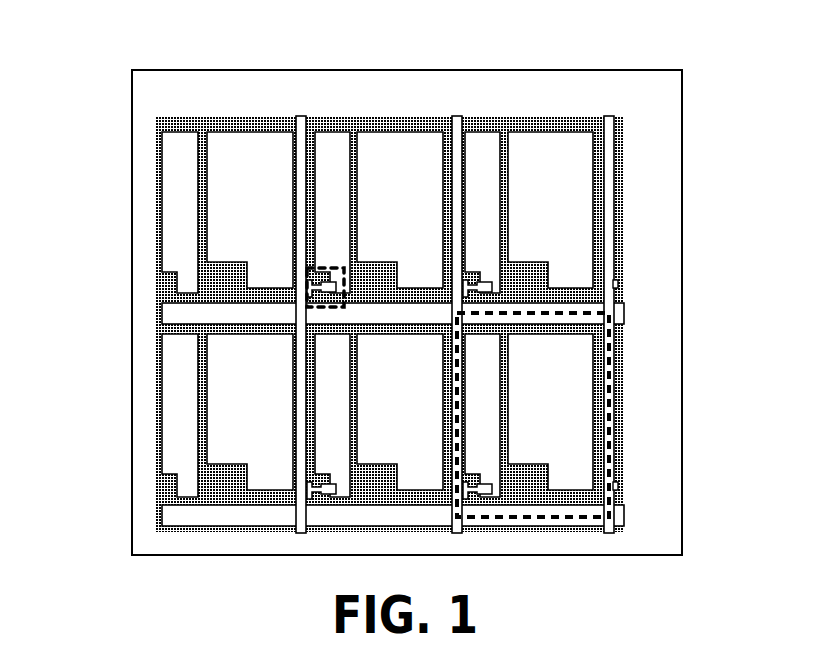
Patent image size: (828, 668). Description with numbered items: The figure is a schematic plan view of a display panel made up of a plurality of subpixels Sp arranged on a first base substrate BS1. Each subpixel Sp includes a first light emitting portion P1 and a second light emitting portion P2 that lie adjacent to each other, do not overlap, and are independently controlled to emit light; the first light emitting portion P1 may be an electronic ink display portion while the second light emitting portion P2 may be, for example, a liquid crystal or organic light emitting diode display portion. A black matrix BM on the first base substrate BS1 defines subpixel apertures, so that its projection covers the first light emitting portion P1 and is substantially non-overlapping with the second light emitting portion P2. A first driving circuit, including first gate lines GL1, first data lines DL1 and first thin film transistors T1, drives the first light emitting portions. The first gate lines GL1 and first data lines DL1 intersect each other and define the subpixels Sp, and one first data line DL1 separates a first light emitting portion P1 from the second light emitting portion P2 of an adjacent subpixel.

The first base substrate BS1 is at (405, 69).
The black matrix BM is at (497, 118).
The first data line DL1 is at (301, 116).
The first gate line GL1 is at (178, 313).
The first thin film transistor T1 is at (305, 290).
The first light emitting portion P1 is at (482, 415).
The second light emitting portion P2 is at (550, 412).
The subpixel Sp is at (612, 425).